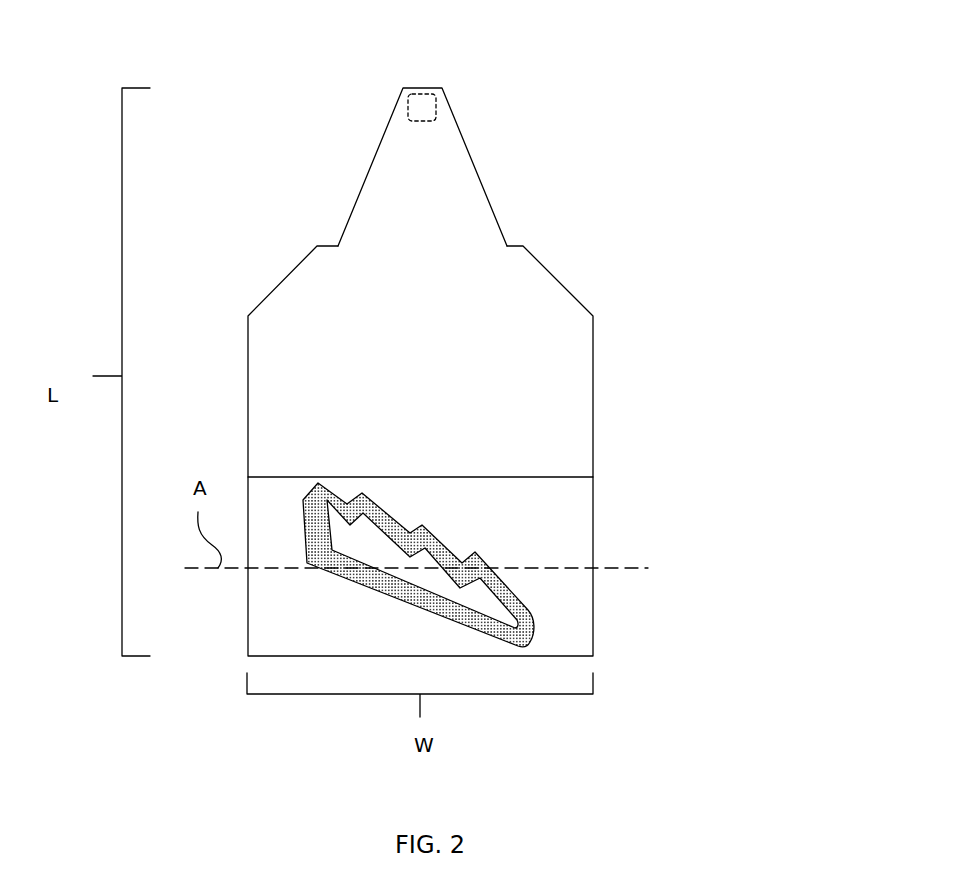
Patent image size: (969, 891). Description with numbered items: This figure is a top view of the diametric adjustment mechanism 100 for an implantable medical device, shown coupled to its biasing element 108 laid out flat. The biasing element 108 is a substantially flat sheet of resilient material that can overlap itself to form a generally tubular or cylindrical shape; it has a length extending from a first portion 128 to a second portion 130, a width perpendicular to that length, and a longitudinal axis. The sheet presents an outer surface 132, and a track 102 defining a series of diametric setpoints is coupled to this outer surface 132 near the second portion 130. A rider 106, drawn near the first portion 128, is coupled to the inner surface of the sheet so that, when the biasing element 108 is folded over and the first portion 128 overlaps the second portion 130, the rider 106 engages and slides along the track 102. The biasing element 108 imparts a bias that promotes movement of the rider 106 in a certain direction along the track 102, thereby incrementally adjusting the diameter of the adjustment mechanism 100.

The diametric adjustment mechanism 100 is at (292, 39).
The track 102 is at (537, 625).
The rider 106 is at (435, 110).
The biasing element 108 is at (518, 327).
The first portion 128 is at (512, 180).
The second portion 130 is at (612, 538).
The outer surface 132 is at (572, 400).